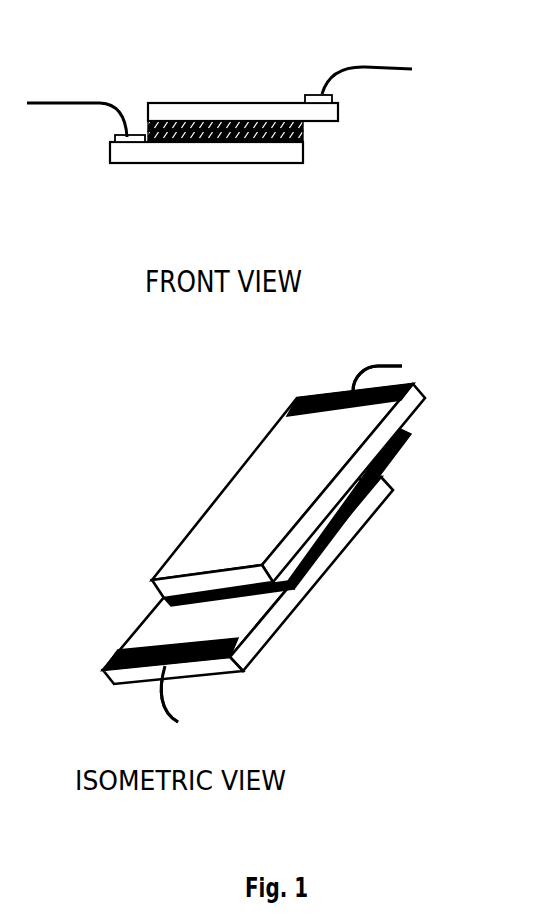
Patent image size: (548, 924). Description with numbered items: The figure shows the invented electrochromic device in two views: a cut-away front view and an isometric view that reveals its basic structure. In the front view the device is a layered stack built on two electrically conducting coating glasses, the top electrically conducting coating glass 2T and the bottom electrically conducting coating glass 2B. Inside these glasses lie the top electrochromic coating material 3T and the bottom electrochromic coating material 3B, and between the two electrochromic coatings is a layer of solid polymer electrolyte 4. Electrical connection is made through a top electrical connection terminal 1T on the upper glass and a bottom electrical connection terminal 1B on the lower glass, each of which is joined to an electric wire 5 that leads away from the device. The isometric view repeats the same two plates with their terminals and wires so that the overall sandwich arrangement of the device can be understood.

The top electrical connection terminal 1T is at (318, 87).
The bottom electrical connection terminal 1B is at (123, 129).
The top electrically conducting coating glass 2T is at (277, 105).
The top electrochromic coating material 3T is at (168, 114).
The bottom electrically conducting coating glass 2B is at (311, 138).
The bottom electrochromic coating material 3B is at (295, 160).
The layer of solid polymer electrolyte 4 is at (232, 141).
The electric wire 5 is at (55, 103).